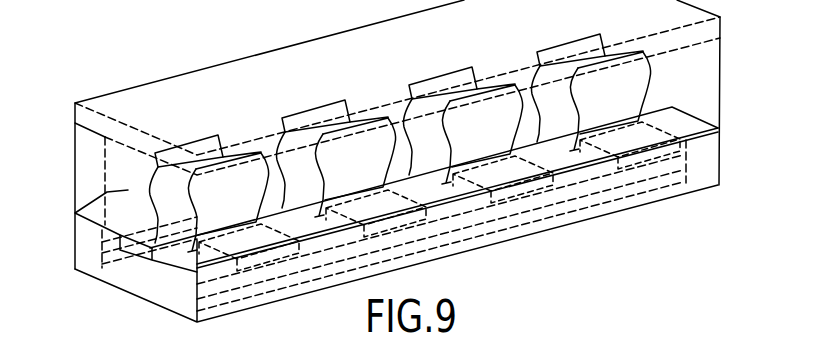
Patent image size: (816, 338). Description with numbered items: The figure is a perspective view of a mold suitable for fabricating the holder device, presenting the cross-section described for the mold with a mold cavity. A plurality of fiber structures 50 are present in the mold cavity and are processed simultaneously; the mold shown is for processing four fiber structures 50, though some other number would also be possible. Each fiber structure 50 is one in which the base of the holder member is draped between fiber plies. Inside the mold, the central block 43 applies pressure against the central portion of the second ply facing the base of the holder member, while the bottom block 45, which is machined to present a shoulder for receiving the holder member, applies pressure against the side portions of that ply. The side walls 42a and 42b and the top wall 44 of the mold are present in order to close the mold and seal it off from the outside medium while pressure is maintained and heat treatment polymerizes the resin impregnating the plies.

The top wall 44 is at (292, 58).
The side wall 42a is at (90, 173).
The side wall 42b is at (152, 203).
The central block 43 is at (75, 213).
The bottom block 45 is at (492, 228).
The fiber structure 50 is at (265, 262).